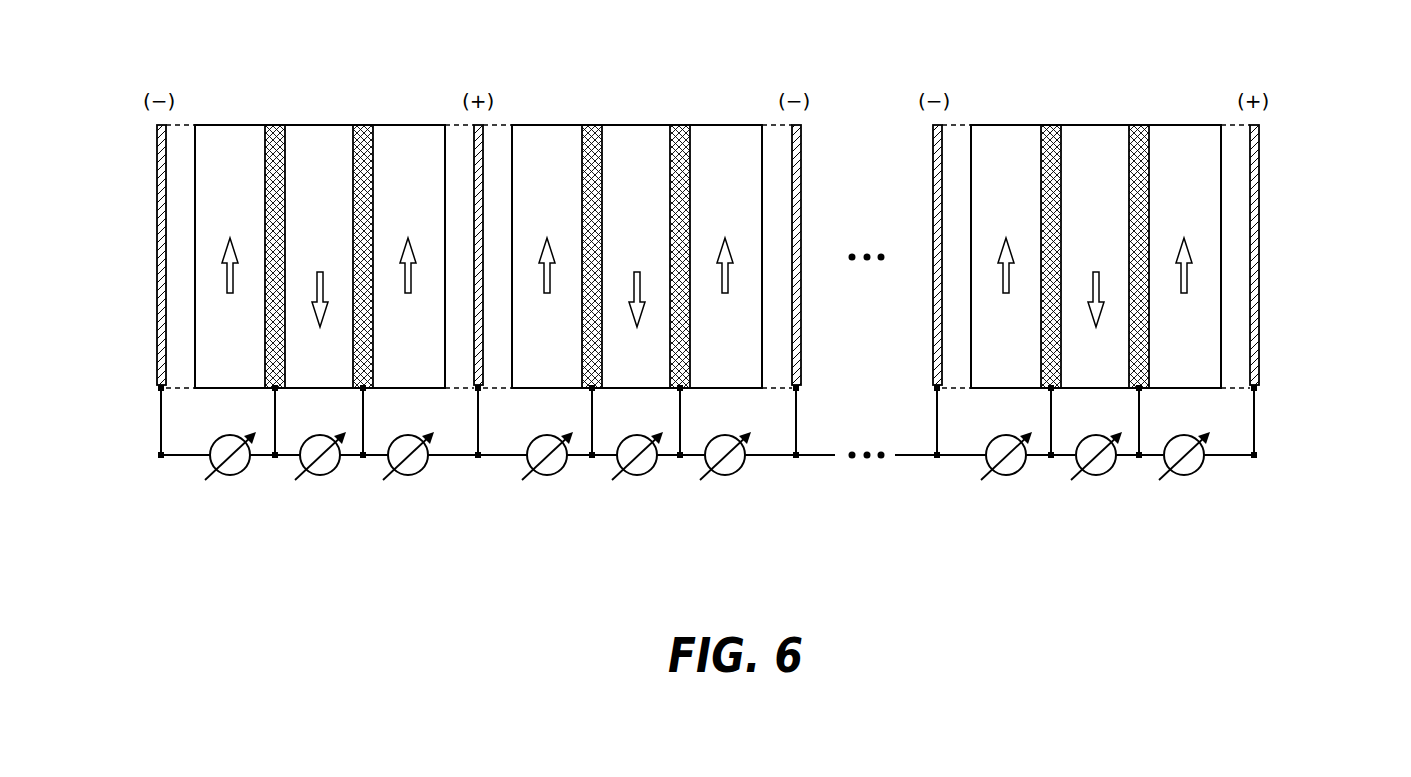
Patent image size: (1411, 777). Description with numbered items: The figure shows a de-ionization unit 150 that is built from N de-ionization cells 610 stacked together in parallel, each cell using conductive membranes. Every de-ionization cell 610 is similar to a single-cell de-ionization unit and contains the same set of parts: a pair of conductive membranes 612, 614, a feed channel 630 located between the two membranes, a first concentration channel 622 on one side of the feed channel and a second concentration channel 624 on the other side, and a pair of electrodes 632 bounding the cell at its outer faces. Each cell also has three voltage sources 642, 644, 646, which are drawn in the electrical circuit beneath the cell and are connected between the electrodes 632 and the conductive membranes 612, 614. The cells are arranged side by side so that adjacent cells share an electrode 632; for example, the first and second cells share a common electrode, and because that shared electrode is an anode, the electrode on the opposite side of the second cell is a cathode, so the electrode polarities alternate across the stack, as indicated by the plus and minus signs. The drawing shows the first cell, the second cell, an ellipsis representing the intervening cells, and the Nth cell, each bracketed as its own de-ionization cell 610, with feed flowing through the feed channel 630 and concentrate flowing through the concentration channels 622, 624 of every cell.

The de-ionization unit 150 is at (911, 33).
The de-ionization cell 610 is at (475, 537).
The conductive membrane 612 is at (287, 142).
The conductive membrane 614 is at (375, 142).
The concentration channel 622 is at (255, 186).
The concentration channel 624 is at (435, 186).
The feed channel 630 is at (343, 186).
The electrode 632 is at (157, 186).
The voltage source 642 is at (243, 473).
The voltage source 644 is at (333, 473).
The voltage source 646 is at (421, 473).